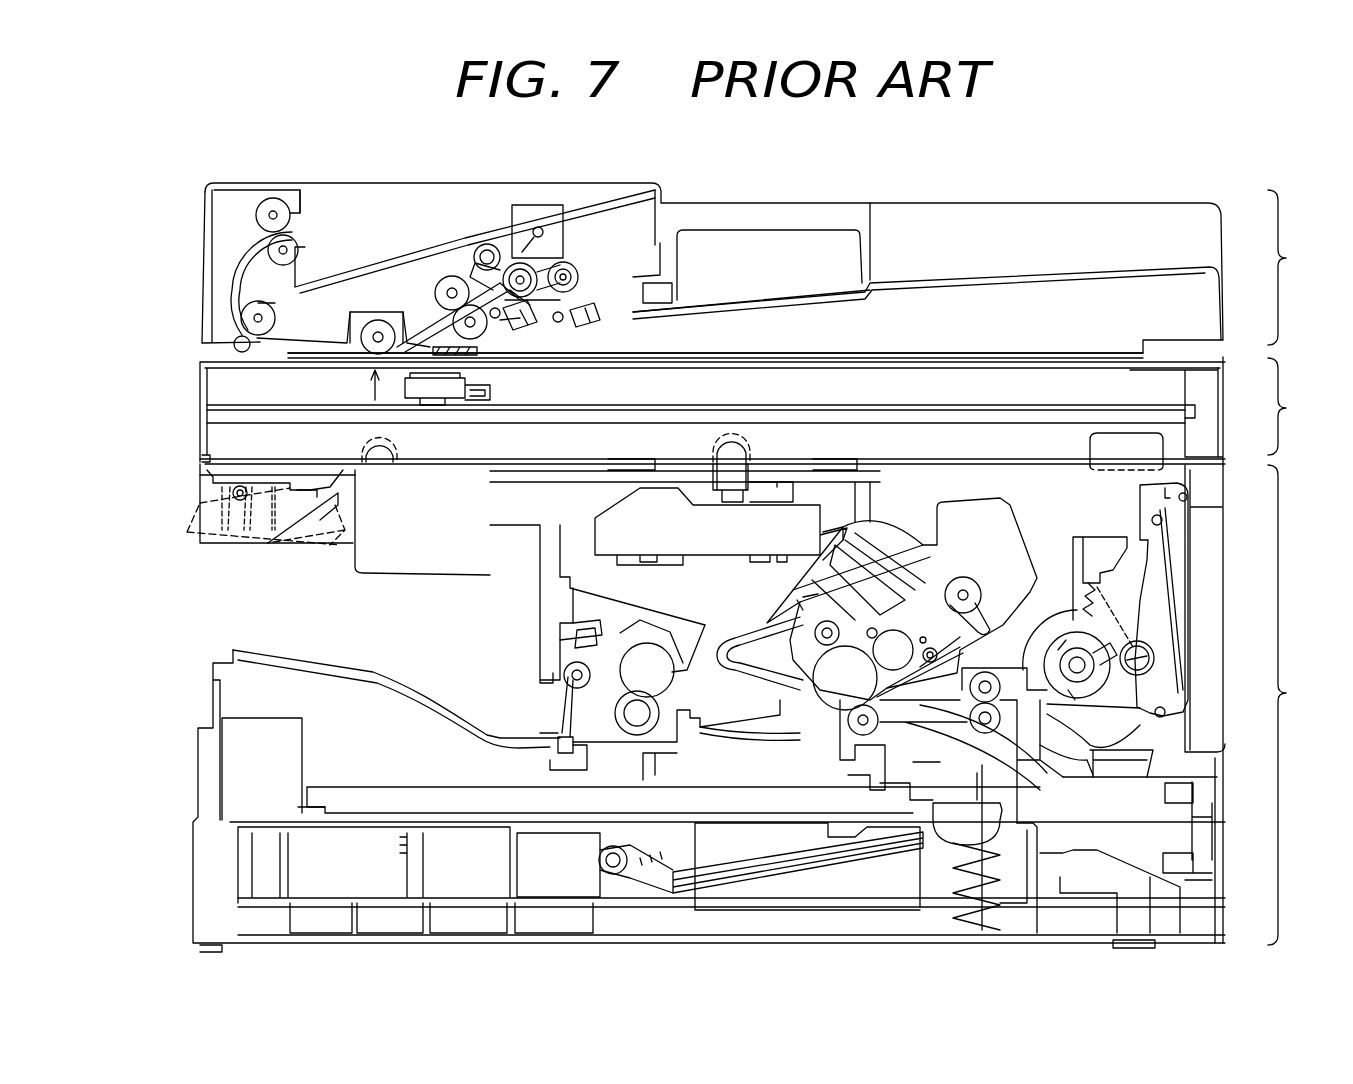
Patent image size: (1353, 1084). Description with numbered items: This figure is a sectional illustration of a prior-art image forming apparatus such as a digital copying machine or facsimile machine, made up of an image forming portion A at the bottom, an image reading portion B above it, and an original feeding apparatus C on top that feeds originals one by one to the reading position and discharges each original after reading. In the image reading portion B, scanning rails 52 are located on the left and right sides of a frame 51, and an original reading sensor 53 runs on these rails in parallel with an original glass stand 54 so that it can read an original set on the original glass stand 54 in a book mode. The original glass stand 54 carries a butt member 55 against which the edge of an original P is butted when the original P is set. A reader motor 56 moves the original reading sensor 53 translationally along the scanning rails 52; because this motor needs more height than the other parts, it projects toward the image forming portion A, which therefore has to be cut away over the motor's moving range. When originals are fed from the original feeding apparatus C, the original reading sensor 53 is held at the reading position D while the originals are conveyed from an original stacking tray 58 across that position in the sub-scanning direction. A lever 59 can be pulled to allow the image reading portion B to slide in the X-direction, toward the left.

The frame 51 is at (200, 380).
The scanning rails 52 is at (210, 418).
The original reading sensor 53 is at (368, 330).
The original glass stand 54 is at (945, 352).
The butt member 55 is at (425, 376).
The reader motor 56 is at (1113, 437).
The original stacking tray 58 is at (737, 300).
The lever 59 is at (225, 545).
The original P is at (622, 348).
The reading position D is at (372, 394).
The X-direction X is at (128, 507).
The image forming portion A is at (1287, 705).
The image reading portion B is at (1287, 406).
The original feeding apparatus C is at (1287, 267).